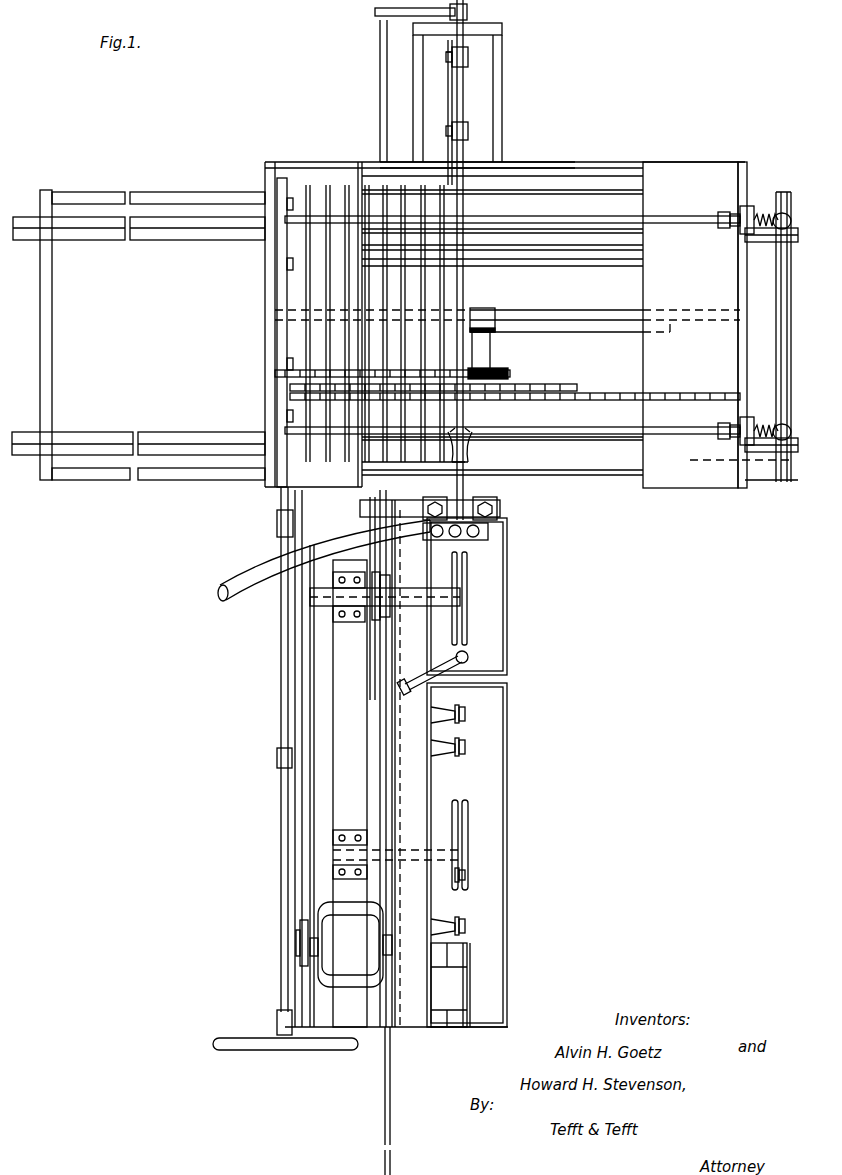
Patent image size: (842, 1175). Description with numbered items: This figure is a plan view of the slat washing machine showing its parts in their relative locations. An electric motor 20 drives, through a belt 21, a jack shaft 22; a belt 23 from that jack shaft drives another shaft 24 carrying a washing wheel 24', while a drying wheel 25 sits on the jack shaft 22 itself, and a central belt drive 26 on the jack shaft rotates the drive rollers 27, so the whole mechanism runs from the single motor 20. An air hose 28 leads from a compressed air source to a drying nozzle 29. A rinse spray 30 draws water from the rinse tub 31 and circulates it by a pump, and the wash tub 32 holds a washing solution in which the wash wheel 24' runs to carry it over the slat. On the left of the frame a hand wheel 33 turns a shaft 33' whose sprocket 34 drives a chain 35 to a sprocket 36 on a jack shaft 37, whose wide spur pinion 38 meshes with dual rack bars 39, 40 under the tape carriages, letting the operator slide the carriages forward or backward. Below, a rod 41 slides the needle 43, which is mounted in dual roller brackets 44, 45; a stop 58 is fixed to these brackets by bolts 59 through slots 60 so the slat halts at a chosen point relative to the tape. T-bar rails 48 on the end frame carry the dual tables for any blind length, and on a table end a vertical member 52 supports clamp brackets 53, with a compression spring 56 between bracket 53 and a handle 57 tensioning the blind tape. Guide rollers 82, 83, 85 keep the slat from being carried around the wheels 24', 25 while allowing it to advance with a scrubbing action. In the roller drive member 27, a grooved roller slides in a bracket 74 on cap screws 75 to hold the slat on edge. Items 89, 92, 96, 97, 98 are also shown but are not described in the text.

The electric motor 20 is at (362, 963).
The belt 21 is at (302, 768).
The jack shaft 22 is at (350, 606).
The belt 23 is at (383, 698).
The shaft 24 is at (386, 851).
The washing wheel 24' is at (475, 843).
The drying wheel 25 is at (468, 620).
The belt drive 26 is at (372, 556).
The drive rollers 27 is at (470, 485).
The air hose 28 is at (246, 568).
The drying nozzle 29 is at (490, 534).
The rinse spray 30 is at (430, 668).
The rinse tub 31 is at (507, 628).
The wash tub 32 is at (507, 860).
The hand wheel 33 is at (285, 1032).
The shaft 33' is at (266, 761).
The sprocket 34 is at (275, 370).
The chain 35 is at (290, 343).
The sprocket 36 is at (510, 374).
The jack shaft 37 is at (492, 350).
The spur pinion 38 is at (495, 312).
The rack bar 39 is at (618, 330).
The rack bar 40 is at (664, 320).
The rod 41 is at (390, 1055).
The needle 43 is at (463, 290).
The roller bracket 44 is at (468, 128).
The roller bracket 45 is at (468, 62).
The T-bar rails 48 is at (96, 432).
The vertical member 52 is at (760, 278).
The clamp bracket 53 is at (752, 208).
The compression spring 56 is at (772, 240).
The handle 57 is at (788, 214).
The stop 58 is at (448, 78).
The bolts 59 is at (446, 58).
The slots 60 is at (466, 183).
The bracket 74 is at (498, 512).
The cap screws 75 is at (500, 505).
The guide roller 82 is at (465, 924).
The guide roller 83 is at (465, 876).
The guide roller 85 is at (465, 712).
The switch 89 is at (465, 748).
The top bar 92 is at (375, 14).
The right housing 96 is at (700, 162).
The main frame 97 is at (297, 160).
The upper tube 98 is at (86, 238).